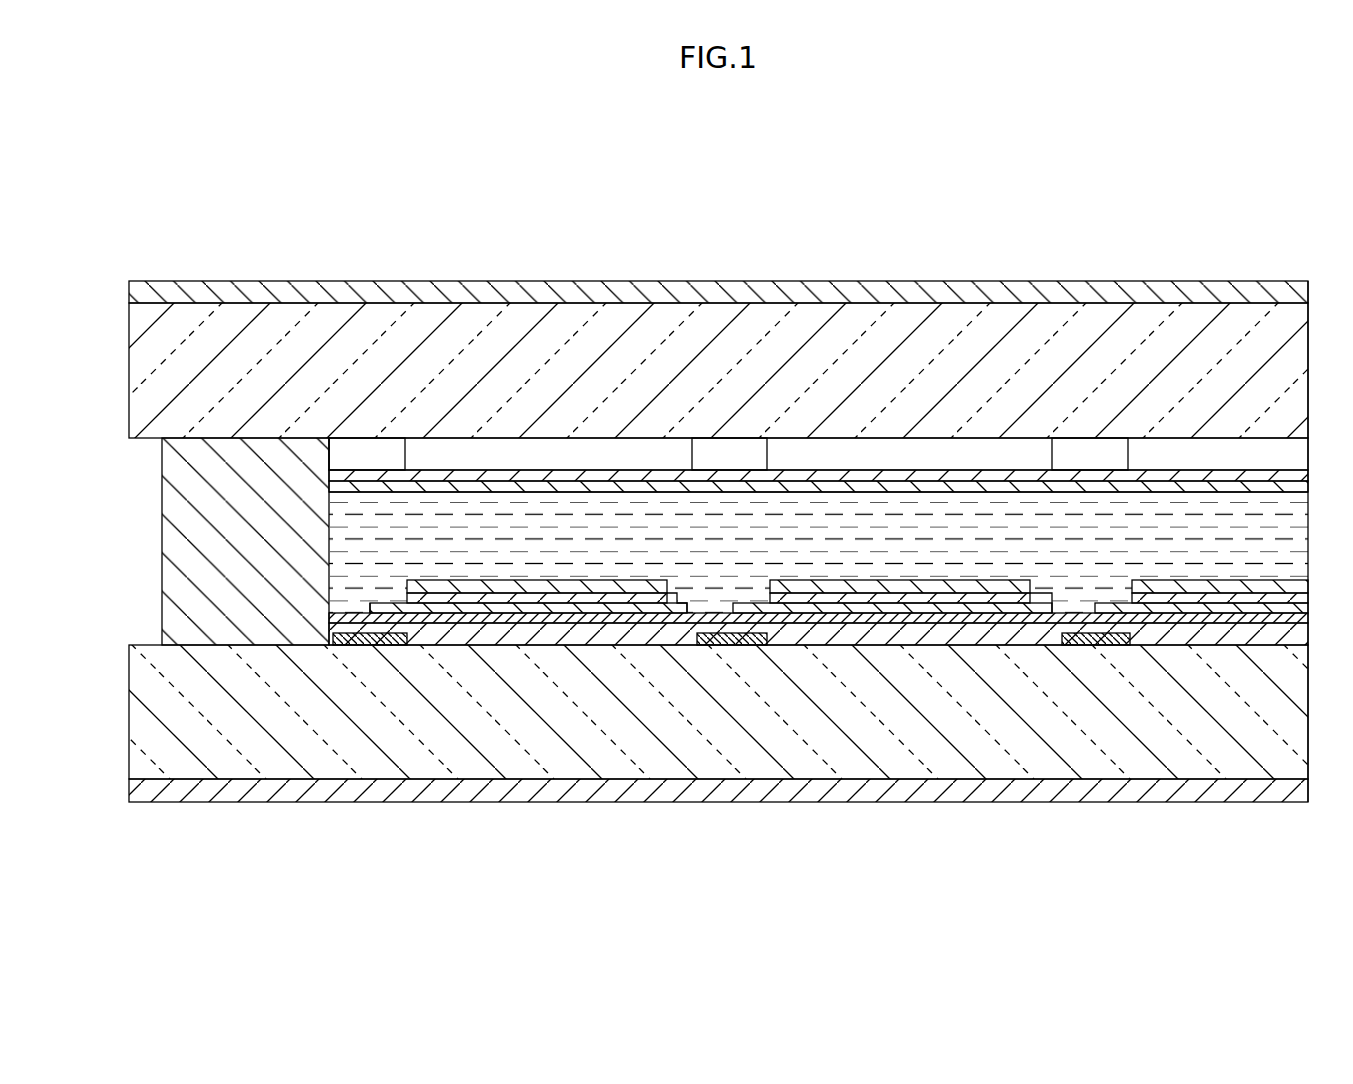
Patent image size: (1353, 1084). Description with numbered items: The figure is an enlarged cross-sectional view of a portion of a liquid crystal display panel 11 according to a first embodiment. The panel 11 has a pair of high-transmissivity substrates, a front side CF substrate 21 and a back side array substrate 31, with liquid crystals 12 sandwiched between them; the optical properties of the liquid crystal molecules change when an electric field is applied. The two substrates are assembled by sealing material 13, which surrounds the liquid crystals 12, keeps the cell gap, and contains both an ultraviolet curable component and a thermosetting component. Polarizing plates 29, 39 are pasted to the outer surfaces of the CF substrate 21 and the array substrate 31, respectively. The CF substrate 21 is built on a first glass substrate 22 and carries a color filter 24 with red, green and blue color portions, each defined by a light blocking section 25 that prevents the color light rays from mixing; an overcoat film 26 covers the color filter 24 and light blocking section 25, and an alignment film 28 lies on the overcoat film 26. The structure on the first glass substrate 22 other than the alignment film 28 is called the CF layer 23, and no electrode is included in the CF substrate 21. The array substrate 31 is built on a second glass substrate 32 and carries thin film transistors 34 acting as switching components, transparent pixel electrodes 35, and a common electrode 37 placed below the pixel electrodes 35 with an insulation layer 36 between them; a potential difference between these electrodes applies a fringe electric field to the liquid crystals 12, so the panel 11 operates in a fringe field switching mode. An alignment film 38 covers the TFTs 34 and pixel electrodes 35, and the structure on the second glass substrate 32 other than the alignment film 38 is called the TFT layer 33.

The liquid crystal display panel 11 is at (281, 210).
The liquid crystals 12 is at (1230, 548).
The sealing material 13 is at (186, 566).
The CF substrate 21 is at (1135, 143).
The first glass substrate 22 is at (905, 370).
The CF layer 23 is at (1010, 190).
The color filter 24 is at (1000, 450).
The light blocking section 25 is at (1090, 438).
The overcoat film 26 is at (1158, 468).
The alignment film 28 is at (830, 474).
The polarizing plate 29 is at (700, 283).
The array substrate 31 is at (618, 913).
The second glass substrate 32 is at (1096, 765).
The TFT layer 33 is at (697, 862).
The thin film transistor 34 is at (738, 646).
The pixel electrode 35 is at (822, 606).
The insulation layer 36 is at (903, 618).
The common electrode 37 is at (978, 632).
The alignment film 38 is at (690, 633).
The polarizing plate 39 is at (428, 790).